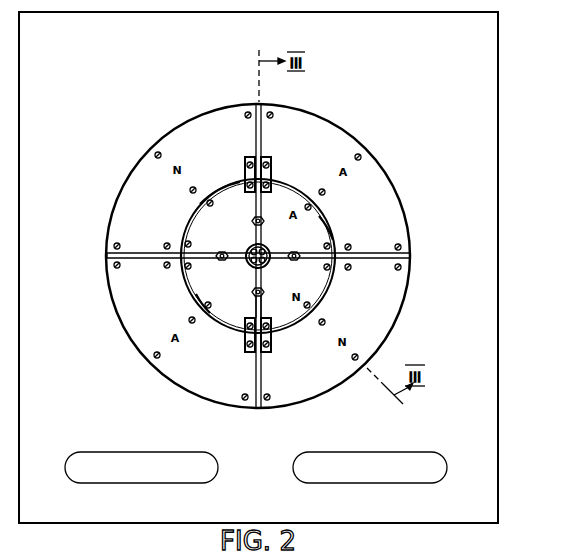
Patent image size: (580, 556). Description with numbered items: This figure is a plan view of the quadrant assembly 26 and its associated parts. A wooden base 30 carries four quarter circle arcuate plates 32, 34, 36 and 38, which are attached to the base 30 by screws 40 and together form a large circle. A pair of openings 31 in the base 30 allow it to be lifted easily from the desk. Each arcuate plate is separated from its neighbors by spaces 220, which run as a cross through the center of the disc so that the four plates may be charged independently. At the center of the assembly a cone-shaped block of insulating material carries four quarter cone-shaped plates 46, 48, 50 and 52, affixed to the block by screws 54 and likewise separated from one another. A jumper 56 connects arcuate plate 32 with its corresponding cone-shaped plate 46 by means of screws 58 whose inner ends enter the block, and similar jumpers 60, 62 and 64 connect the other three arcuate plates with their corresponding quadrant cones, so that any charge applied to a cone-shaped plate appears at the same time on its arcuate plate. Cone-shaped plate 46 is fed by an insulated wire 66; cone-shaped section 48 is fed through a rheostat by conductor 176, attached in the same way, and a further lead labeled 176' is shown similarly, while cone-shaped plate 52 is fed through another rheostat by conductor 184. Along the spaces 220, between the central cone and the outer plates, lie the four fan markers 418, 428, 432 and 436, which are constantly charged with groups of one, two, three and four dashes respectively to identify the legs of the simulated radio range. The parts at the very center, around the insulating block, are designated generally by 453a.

The quadrant assembly 26 is at (233, 253).
The wooden base 30 is at (483, 362).
The openings 31 is at (207, 475).
The quarter circle arcuate plate 32 is at (378, 328).
The quarter circle arcuate plate 34 is at (338, 138).
The quarter circle arcuate plate 36 is at (177, 142).
The quarter circle arcuate plate 38 is at (132, 320).
The screws 40 is at (165, 245).
The quarter cone-shaped plate 46 is at (313, 288).
The quarter cone-shaped plate 48 is at (291, 205).
The quarter cone-shaped plate 50 is at (220, 200).
The quarter cone-shaped plate 52 is at (200, 288).
The screws 54 is at (311, 211).
The jumper 56 is at (271, 343).
The screws 58 is at (267, 352).
The jumper 60 is at (272, 165).
The jumper 62 is at (245, 166).
The jumper 64 is at (247, 342).
The wire 66 is at (290, 289).
The conductor 176 is at (344, 226).
The ring segment 176' is at (182, 217).
The conductor 184 is at (225, 285).
The spaces 220 is at (152, 259).
The fan marker 418 is at (298, 258).
The fan marker 428 is at (262, 218).
The fan marker 432 is at (184, 270).
The fan marker 436 is at (252, 296).
The insulating block elements 453a is at (270, 247).